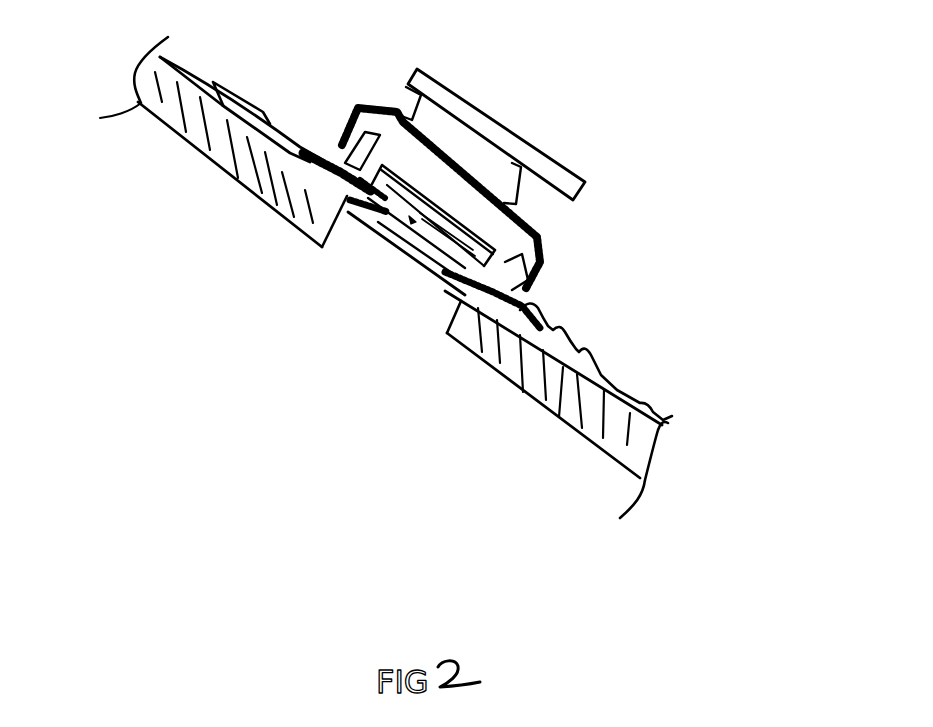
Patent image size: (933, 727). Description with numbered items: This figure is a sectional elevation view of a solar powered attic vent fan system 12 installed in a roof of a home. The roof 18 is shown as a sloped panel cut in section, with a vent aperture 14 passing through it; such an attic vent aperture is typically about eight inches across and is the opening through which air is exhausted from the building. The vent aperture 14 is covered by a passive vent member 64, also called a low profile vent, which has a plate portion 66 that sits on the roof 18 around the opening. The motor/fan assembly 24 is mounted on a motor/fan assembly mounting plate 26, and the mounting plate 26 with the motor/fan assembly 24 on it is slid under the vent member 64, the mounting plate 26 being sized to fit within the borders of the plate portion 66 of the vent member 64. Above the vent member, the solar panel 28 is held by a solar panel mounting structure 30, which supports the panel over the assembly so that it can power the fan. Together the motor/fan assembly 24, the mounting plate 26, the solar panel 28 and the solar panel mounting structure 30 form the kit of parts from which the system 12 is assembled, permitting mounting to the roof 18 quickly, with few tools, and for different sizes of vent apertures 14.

The solar powered attic vent fan system 12 is at (782, 67).
The vent aperture 14 is at (346, 247).
The roof 18 is at (605, 381).
The motor/fan assembly 24 is at (398, 218).
The motor/fan assembly mounting plate 26 is at (435, 284).
The solar panel 28 is at (520, 135).
The solar panel mounting structure 30 is at (537, 200).
The passive vent member 64 is at (530, 238).
The plate portion 66 is at (320, 167).